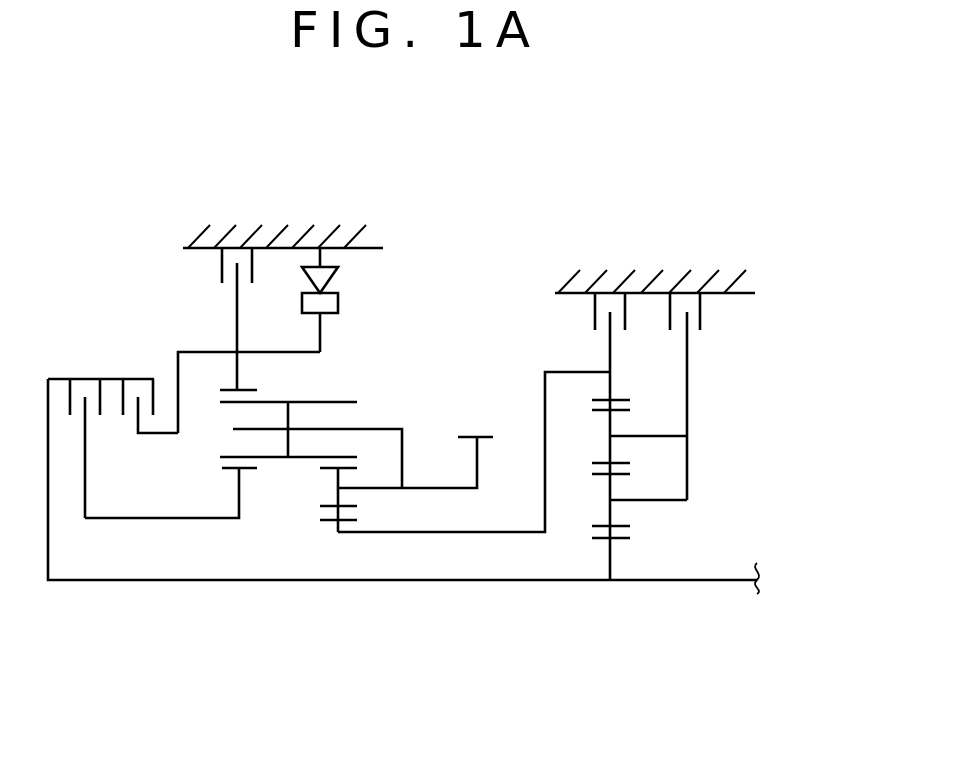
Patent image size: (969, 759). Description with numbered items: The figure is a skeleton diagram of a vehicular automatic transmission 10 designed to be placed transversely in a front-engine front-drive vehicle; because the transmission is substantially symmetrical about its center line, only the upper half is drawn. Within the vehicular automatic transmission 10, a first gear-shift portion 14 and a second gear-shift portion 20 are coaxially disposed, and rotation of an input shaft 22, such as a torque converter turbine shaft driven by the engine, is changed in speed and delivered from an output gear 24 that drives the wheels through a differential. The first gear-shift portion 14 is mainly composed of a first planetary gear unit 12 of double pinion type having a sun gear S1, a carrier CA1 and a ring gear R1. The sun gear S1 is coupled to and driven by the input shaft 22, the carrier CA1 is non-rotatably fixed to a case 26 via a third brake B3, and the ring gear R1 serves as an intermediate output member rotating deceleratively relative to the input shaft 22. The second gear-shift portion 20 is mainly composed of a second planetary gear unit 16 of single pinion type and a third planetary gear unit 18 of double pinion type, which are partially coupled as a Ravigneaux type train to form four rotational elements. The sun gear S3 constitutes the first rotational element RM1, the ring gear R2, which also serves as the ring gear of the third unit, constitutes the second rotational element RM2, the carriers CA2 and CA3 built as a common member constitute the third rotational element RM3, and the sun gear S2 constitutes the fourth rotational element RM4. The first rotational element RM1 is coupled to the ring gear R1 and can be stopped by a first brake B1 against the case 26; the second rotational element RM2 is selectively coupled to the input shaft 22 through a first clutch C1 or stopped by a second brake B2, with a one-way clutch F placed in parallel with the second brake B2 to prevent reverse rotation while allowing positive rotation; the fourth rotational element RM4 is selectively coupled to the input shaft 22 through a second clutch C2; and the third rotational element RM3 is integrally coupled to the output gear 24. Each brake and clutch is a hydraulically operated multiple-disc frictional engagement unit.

The vehicular automatic transmission 10 is at (721, 186).
The first planetary gear unit 12 is at (610, 589).
The first gear-shift portion 14 is at (533, 312).
The second planetary gear unit 16 is at (269, 515).
The third planetary gear unit 18 is at (428, 554).
The second gear-shift portion 20 is at (408, 257).
The input shaft 22 is at (720, 582).
The output gear 24 is at (485, 436).
The case 26 is at (286, 242).
The first brake B1 is at (585, 317).
The second brake B2 is at (215, 319).
The third brake B3 is at (710, 396).
The first clutch C1 is at (148, 389).
The second clutch C2 is at (101, 431).
The one-way clutch F is at (333, 300).
The ring gear R1 is at (617, 398).
The ring gear R2 is at (245, 389).
The carrier CA1 is at (688, 475).
The carrier CA2 is at (245, 427).
The carrier CA3 is at (380, 487).
The sun gear S1 is at (617, 539).
The sun gear S2 is at (250, 472).
The sun gear S3 is at (350, 520).
The first rotational element RM1 is at (437, 533).
The second rotational element RM2 is at (203, 351).
The third rotational element RM3 is at (437, 488).
The fourth rotational element RM4 is at (108, 520).